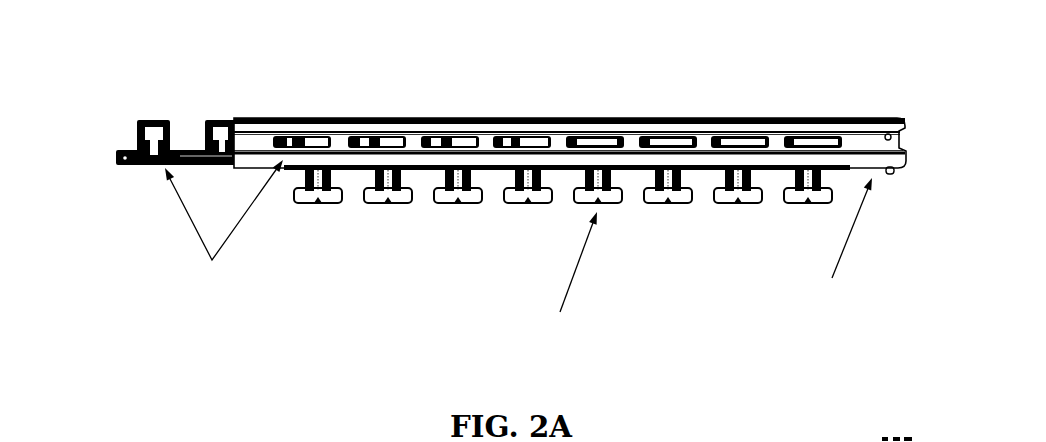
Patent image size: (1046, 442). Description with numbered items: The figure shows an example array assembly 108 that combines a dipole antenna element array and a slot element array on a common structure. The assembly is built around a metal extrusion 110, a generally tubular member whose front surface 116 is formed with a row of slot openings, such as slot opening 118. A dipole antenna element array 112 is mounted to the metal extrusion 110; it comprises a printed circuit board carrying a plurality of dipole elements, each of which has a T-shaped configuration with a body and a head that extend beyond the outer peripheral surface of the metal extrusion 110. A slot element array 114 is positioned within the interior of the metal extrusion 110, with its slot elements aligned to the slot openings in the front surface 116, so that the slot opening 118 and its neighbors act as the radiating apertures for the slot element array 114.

The array assembly 108 is at (712, 84).
The metal extrusion 110 is at (817, 118).
The dipole antenna element array 112 is at (700, 210).
The slot element array 114 is at (196, 106).
The front surface 116 is at (258, 142).
The slot opening 118 is at (387, 138).